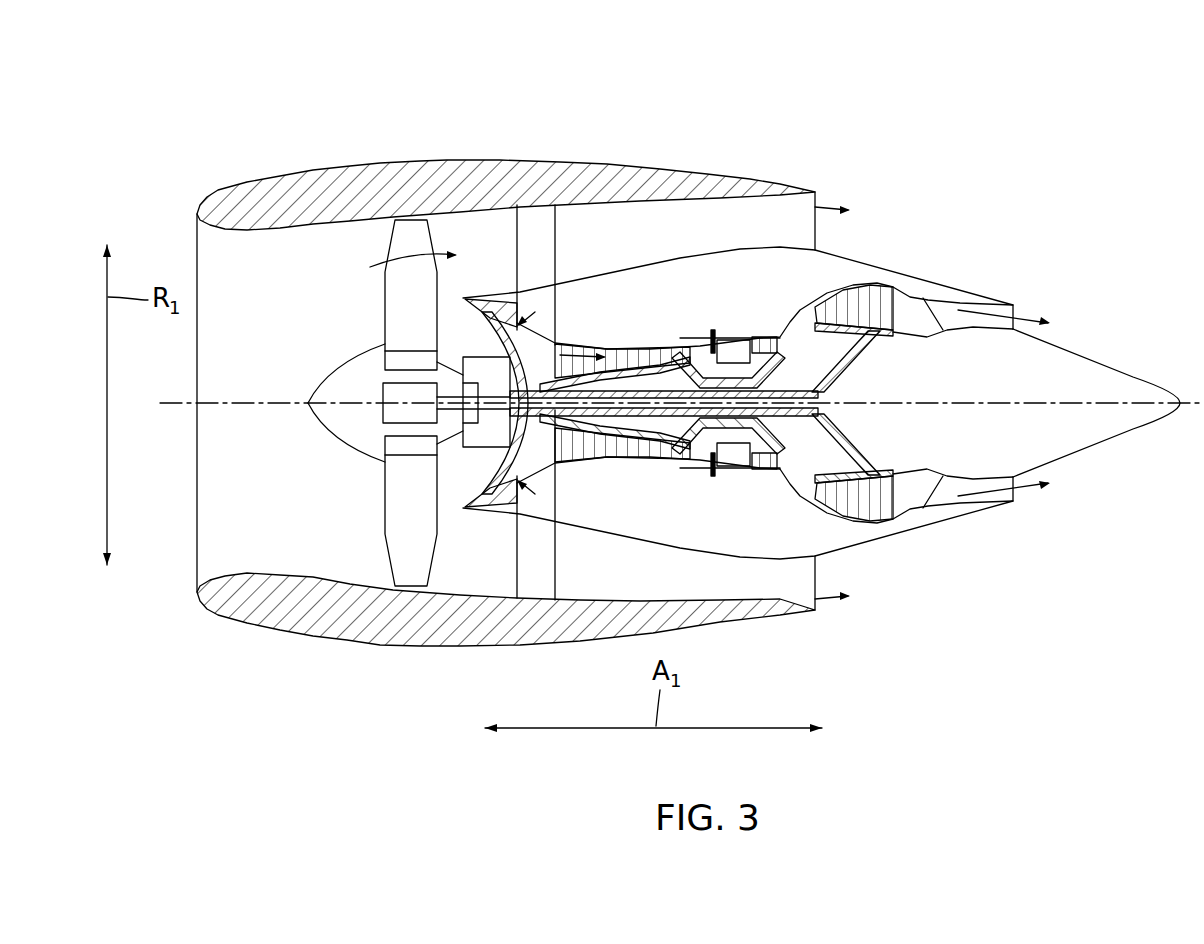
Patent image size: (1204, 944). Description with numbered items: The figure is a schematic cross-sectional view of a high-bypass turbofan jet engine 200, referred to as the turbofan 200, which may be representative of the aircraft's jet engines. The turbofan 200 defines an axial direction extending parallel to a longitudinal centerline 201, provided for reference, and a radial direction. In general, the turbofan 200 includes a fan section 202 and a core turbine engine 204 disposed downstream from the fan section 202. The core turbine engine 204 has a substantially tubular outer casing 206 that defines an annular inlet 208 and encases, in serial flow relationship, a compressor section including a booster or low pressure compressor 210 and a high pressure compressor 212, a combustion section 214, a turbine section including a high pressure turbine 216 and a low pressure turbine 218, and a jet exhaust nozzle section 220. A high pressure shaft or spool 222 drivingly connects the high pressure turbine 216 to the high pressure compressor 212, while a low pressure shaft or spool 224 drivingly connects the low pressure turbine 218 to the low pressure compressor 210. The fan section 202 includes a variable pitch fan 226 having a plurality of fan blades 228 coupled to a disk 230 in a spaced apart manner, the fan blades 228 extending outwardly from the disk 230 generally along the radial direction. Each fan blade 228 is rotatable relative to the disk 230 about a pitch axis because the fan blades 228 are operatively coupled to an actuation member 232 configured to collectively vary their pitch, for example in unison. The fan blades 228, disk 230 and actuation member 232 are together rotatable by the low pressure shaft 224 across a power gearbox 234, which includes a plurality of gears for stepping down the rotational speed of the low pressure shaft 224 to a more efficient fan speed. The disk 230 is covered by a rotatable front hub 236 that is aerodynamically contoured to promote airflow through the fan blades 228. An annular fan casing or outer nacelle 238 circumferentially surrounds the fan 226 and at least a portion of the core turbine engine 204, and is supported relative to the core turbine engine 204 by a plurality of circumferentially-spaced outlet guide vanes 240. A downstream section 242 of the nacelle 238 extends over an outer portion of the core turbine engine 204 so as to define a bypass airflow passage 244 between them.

The high-bypass turbofan jet engine 200 is at (1022, 150).
The longitudinal centerline 201 is at (960, 401).
The fan section 202 is at (348, 277).
The core turbine engine 204 is at (690, 285).
The outer casing 206 is at (748, 562).
The annular inlet 208 is at (470, 497).
The low pressure compressor 210 is at (507, 512).
The high pressure compressor 212 is at (574, 458).
The combustion section 214 is at (729, 465).
The high pressure turbine 216 is at (797, 456).
The low pressure turbine 218 is at (873, 527).
The jet exhaust nozzle section 220 is at (946, 492).
The high pressure shaft 222 is at (728, 338).
The low pressure shaft 224 is at (826, 389).
The variable pitch fan 226 is at (350, 457).
The fan blade 228 is at (383, 551).
The disk 230 is at (386, 364).
The actuation member 232 is at (385, 393).
The power gearbox 234 is at (540, 360).
The front hub 236 is at (335, 435).
The outer nacelle 238 is at (405, 650).
The outlet guide vane 240 is at (557, 232).
The downstream section of the nacelle 242 is at (771, 165).
The bypass airflow passage 244 is at (771, 237).